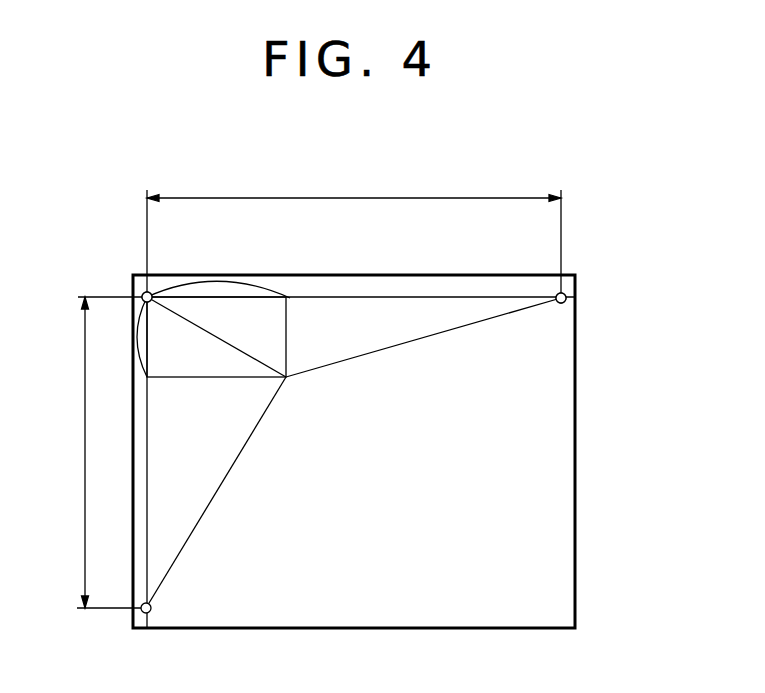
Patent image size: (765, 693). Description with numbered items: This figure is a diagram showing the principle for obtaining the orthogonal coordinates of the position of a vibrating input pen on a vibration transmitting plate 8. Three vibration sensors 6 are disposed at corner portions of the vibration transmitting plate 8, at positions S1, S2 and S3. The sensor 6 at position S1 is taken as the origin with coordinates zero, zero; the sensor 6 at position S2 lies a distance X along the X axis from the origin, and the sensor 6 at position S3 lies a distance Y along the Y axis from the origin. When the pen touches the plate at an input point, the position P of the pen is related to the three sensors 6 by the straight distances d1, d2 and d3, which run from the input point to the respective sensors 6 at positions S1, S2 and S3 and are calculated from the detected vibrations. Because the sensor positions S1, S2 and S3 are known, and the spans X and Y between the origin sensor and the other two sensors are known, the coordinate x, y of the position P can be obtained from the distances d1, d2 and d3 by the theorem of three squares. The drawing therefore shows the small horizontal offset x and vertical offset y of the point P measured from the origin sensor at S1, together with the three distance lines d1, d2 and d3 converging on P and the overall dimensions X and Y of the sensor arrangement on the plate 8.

The vibration sensor 6 is at (142, 293).
The vibration transmitting plate 8 is at (575, 442).
The sensor position S1 is at (209, 254).
The sensor position S2 is at (536, 330).
The sensor position S3 is at (196, 607).
The position of the vibrating input pen P is at (257, 355).
The straight distance d1 is at (216, 337).
The straight distance d2 is at (423, 337).
The straight distance d3 is at (216, 492).
The distance X is at (354, 183).
The distance Y is at (74, 452).
The x coordinate x is at (227, 279).
The y coordinate y is at (139, 342).